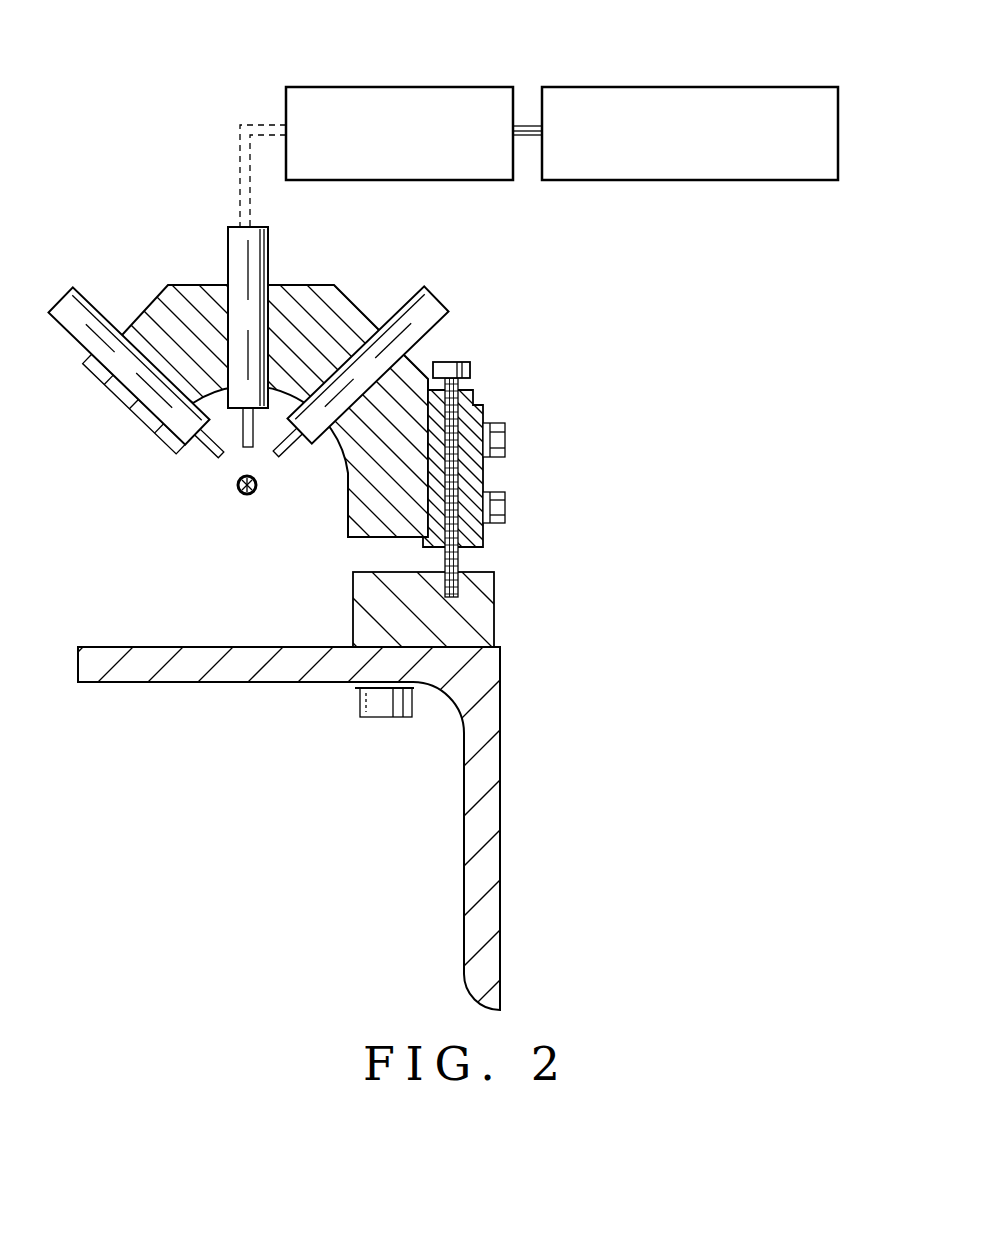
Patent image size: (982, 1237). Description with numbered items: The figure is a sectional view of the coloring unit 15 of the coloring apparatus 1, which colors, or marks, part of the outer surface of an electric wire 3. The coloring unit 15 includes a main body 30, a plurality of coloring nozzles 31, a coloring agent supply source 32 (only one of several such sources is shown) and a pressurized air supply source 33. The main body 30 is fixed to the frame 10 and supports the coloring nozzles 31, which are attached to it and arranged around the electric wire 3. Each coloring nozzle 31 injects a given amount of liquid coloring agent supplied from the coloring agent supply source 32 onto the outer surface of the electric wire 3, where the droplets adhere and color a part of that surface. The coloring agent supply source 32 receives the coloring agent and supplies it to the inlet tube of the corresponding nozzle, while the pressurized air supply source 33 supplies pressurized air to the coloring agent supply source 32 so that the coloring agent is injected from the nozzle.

The coloring apparatus 1 is at (585, 375).
The electric wire 3 is at (238, 495).
The frame 10 is at (502, 808).
The coloring unit 15 is at (422, 358).
The main body 30 is at (345, 495).
The coloring nozzles 31 is at (107, 305).
The coloring agent supply source 32 is at (411, 85).
The pressurized air supply source 33 is at (669, 85).